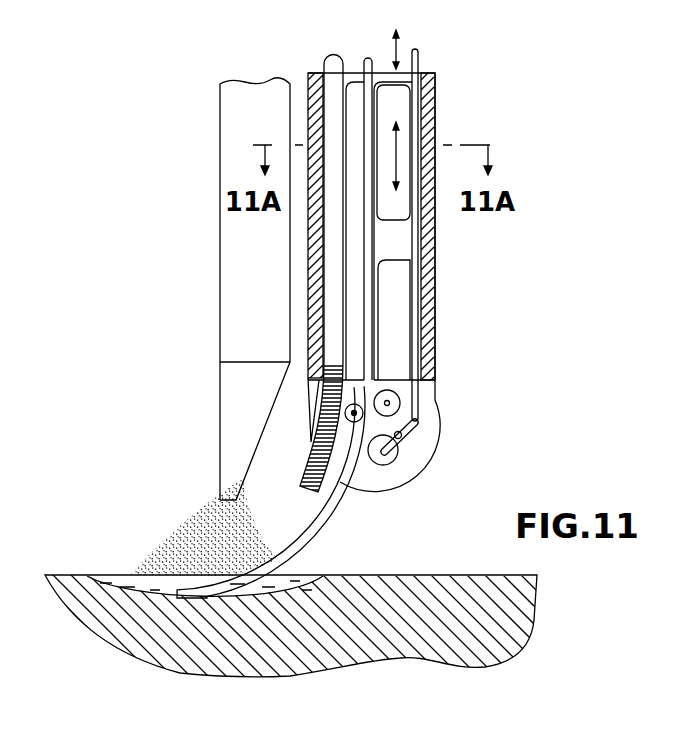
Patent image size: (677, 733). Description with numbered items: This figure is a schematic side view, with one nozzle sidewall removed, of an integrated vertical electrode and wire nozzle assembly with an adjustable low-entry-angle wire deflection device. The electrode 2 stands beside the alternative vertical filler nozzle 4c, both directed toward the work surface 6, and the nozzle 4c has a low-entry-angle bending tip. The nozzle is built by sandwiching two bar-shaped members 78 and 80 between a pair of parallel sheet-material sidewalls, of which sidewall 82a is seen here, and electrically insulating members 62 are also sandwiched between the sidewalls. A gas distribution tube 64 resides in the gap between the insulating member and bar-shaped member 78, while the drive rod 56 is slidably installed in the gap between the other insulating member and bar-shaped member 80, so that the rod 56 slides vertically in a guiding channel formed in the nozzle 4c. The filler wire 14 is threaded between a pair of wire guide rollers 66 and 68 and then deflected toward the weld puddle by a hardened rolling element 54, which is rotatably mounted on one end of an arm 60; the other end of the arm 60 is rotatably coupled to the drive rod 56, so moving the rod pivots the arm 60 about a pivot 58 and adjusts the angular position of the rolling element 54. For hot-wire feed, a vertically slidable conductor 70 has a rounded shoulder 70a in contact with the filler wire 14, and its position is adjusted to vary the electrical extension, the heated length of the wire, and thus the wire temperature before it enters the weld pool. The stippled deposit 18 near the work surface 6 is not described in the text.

The electrode 2 is at (220, 295).
The vertical filler nozzle 4c is at (436, 308).
The work surface 6 is at (450, 575).
The filler wire 14 is at (323, 533).
The deposited material 18 is at (188, 527).
The hardened rolling element 54 is at (388, 462).
The drive rod 56 is at (414, 62).
The pivot 58 is at (403, 437).
The arm 60 is at (411, 428).
The electrically insulating members 62 is at (398, 278).
The gas distribution tube 64 is at (325, 67).
The wire guide roller 66 is at (390, 390).
The wire guide roller 68 is at (320, 417).
The vertically slidable conductor 70 is at (393, 102).
The rounded shoulder 70a is at (354, 182).
The bar-shaped member 78 is at (308, 84).
The bar-shaped member 80 is at (434, 129).
The sidewall 82a is at (383, 72).